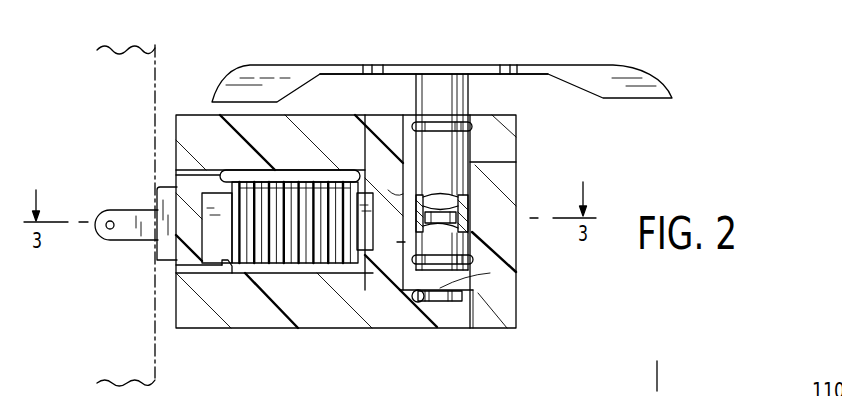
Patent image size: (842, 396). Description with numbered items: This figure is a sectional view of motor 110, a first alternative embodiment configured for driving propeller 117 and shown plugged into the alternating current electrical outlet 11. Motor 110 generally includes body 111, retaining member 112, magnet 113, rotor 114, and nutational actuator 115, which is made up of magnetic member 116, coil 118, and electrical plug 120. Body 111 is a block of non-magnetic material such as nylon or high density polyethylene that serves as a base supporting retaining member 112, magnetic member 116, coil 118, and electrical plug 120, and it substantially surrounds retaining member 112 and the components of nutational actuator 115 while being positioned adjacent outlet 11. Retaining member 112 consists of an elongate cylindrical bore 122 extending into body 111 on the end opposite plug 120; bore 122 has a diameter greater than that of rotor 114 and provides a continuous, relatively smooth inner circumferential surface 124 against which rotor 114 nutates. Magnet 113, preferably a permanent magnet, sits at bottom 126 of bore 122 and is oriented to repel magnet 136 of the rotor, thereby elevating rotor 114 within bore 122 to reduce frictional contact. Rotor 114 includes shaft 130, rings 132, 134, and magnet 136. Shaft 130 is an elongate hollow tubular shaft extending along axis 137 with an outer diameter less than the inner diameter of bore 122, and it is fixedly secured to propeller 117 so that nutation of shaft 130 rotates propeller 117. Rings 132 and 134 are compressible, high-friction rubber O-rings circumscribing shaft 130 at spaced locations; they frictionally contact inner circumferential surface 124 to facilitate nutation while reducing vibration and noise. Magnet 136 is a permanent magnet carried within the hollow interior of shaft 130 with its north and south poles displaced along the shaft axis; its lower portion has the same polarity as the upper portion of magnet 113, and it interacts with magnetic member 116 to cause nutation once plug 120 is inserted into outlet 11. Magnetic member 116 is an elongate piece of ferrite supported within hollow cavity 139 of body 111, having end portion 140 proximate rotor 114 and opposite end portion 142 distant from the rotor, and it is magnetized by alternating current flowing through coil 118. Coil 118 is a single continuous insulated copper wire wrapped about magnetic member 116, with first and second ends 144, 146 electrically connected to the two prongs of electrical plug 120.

The electrical outlet 11 is at (158, 90).
The motor 110 is at (236, 57).
The body 111 is at (252, 330).
The retaining member 112 is at (505, 287).
The magnet 113 is at (440, 288).
The rotor 114 is at (481, 90).
The nutational actuator 115 is at (228, 272).
The magnetic member 116 is at (363, 253).
The propeller 117 is at (561, 64).
The coil 118 is at (315, 270).
The electrical plug 120 is at (126, 198).
The bore 122 is at (478, 293).
The inner circumferential surface 124 is at (470, 212).
The bottom 126 is at (414, 298).
The shaft 130 is at (475, 162).
The ring 132 is at (476, 128).
The ring 134 is at (472, 258).
The magnet 136 is at (470, 202).
The axis 137 is at (658, 387).
The hollow cavity 139 is at (270, 270).
The end portion 140 is at (373, 130).
The opposite end portion 142 is at (180, 240).
The first end 144 is at (173, 270).
The second end 146 is at (176, 182).